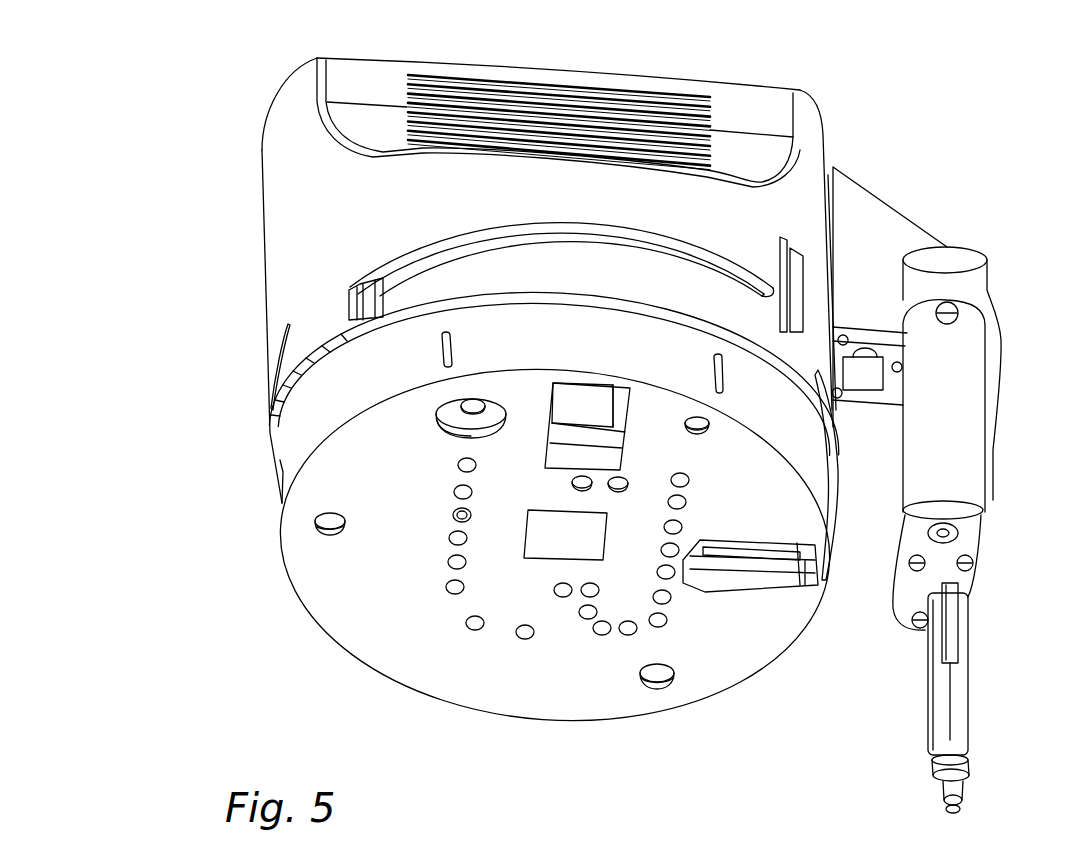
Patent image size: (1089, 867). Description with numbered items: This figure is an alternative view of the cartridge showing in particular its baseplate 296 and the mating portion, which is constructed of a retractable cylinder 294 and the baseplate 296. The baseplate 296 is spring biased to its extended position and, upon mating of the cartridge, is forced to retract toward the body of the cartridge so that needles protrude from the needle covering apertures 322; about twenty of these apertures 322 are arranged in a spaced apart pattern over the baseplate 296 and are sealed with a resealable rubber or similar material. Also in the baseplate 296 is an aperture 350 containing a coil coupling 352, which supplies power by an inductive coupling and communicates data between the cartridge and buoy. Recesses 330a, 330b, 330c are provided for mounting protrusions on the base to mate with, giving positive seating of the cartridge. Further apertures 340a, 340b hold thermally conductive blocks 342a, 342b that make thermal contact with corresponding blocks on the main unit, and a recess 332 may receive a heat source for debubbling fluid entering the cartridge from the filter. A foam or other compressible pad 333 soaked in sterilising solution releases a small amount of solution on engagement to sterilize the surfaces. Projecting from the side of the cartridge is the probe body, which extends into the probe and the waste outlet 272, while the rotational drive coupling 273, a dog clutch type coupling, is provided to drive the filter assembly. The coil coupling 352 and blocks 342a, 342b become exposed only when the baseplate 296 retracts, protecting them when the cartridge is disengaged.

The waste outlet 272 is at (958, 713).
The rotational drive coupling 273 is at (958, 534).
The retractable cylinder 294 is at (292, 437).
The baseplate 296 is at (334, 640).
The apertures 322 is at (470, 627).
The recess 330a is at (316, 526).
The recess 330b is at (666, 683).
The recess 330c is at (704, 433).
The recess 332 is at (882, 386).
The compressible pad 333 is at (565, 535).
The aperture 340a is at (606, 402).
The aperture 340b is at (798, 568).
The thermally conductive block 342a is at (558, 396).
The thermally conductive block 342b is at (740, 556).
The aperture 350 is at (450, 432).
The coil coupling 352 is at (458, 406).